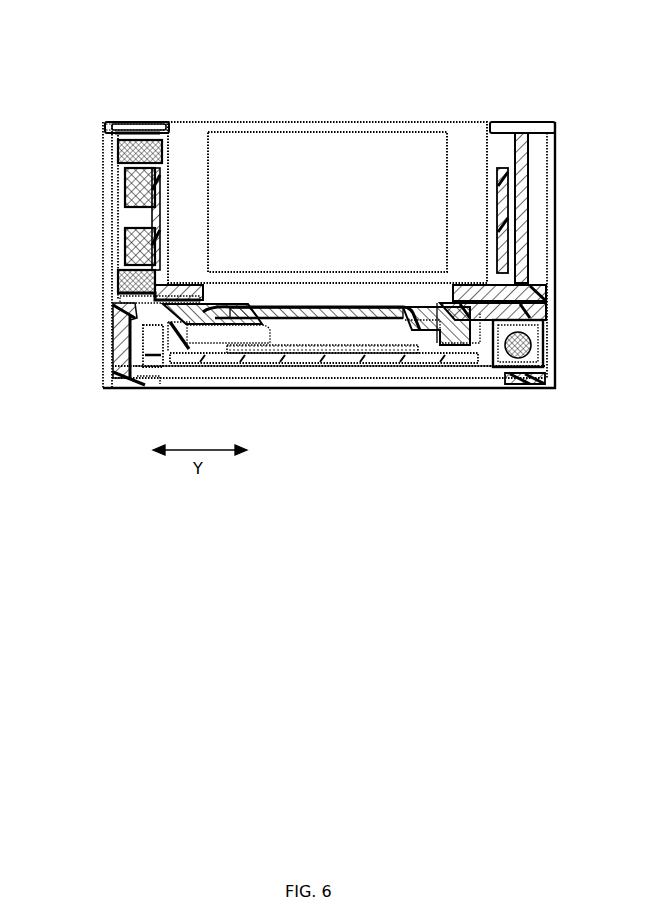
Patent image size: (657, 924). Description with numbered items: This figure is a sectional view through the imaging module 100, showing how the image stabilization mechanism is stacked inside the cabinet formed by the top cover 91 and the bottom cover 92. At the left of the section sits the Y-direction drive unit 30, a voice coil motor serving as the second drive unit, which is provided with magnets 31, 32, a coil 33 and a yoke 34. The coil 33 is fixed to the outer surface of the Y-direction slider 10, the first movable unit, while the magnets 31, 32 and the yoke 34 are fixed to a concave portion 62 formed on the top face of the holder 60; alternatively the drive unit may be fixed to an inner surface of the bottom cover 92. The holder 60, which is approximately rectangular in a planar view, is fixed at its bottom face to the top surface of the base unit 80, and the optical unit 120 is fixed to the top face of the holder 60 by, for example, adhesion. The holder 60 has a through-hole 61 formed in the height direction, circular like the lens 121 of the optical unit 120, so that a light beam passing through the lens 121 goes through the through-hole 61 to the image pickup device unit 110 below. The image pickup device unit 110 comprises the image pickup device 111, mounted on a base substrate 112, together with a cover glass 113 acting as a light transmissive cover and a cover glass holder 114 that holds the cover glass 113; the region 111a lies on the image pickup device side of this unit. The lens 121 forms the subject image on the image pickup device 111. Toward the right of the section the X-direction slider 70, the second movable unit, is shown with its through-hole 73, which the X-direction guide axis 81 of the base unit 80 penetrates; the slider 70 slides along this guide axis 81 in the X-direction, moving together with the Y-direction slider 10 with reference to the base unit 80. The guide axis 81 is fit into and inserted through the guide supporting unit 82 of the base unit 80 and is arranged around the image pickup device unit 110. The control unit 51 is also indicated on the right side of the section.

The imaging module 100 is at (91, 78).
The Y-direction slider 10 is at (505, 249).
The Y-direction drive unit 30 is at (48, 130).
The magnet 31 is at (118, 152).
The magnet 32 is at (118, 283).
The coil 33 is at (126, 243).
The yoke 34 is at (112, 185).
The control unit 51 is at (524, 200).
The holder 60 is at (547, 295).
The through-hole 61 is at (438, 300).
The concave portion 62 is at (118, 288).
The X-direction slider 70 is at (148, 355).
The through-hole 73 is at (519, 347).
The base unit 80 is at (110, 365).
The X-direction guide axis 81 is at (546, 380).
The guide supporting unit 82 is at (545, 362).
The top cover 91 is at (151, 124).
The bottom cover 92 is at (104, 125).
The image pickup device unit 110 is at (270, 365).
The image pickup device 111 is at (332, 356).
The substrate portion 111a is at (361, 348).
The base substrate 112 is at (222, 322).
The cover glass 113 is at (400, 320).
The cover glass holder 114 is at (178, 340).
The optical unit 120 is at (455, 120).
The lens 121 is at (388, 131).